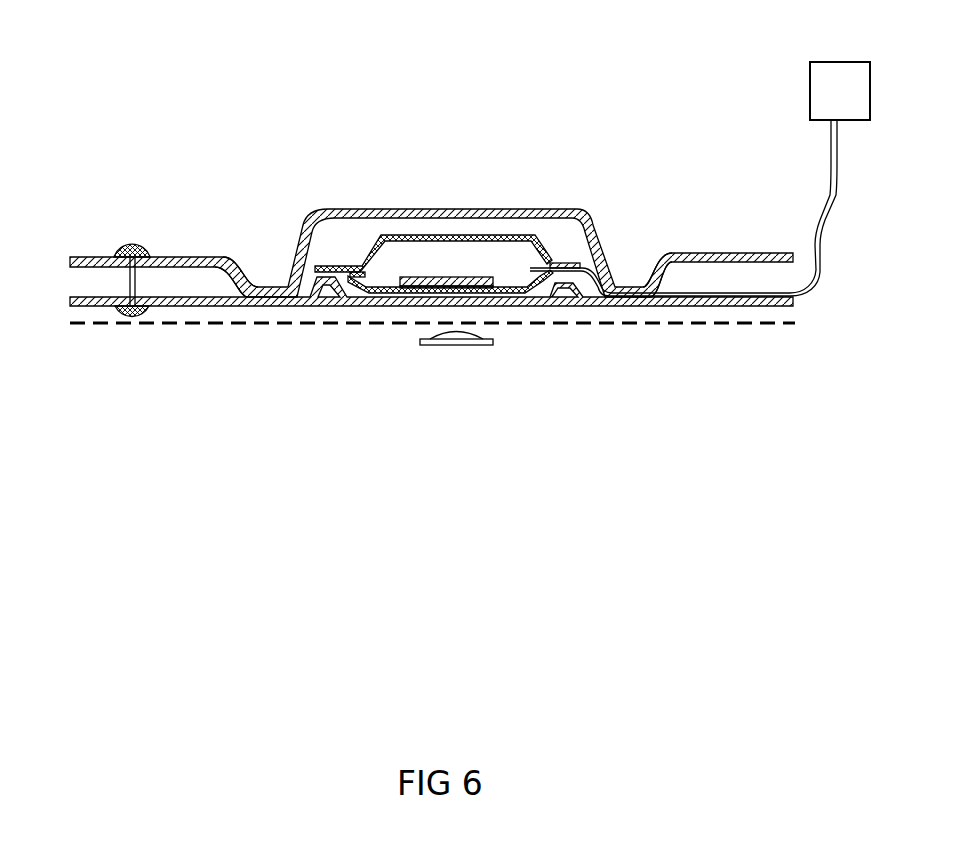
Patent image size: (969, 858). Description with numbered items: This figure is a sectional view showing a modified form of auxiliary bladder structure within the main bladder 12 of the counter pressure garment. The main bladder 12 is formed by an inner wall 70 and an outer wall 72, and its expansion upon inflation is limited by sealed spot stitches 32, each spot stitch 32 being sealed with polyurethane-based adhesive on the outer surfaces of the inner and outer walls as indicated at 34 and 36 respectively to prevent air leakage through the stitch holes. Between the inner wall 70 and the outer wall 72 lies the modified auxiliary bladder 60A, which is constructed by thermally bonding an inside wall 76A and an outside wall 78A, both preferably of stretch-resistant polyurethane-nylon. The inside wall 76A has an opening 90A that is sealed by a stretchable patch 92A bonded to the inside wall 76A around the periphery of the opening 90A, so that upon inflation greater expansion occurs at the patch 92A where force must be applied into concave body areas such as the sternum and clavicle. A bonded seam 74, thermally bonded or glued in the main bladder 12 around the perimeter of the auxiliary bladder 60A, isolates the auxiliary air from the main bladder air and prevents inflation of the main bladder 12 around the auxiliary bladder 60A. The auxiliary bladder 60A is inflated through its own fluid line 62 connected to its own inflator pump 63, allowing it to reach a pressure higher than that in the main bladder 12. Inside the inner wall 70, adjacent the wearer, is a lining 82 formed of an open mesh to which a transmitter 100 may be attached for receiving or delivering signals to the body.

The main bladder 12 is at (409, 203).
The spot stitch 32 is at (139, 263).
The seal on inner wall 34 is at (131, 318).
The seal on outer wall 36 is at (130, 243).
The modified auxiliary bladder 60A is at (444, 308).
The fluid line 62 is at (818, 294).
The inflator pump 63 is at (832, 90).
The inner wall 70 is at (192, 306).
The outer wall 72 is at (88, 257).
The bonded seam 74 is at (265, 287).
The inside wall 76A is at (395, 291).
The outside wall 78A is at (404, 235).
The lining 82 is at (633, 326).
The opening 90A is at (483, 300).
The stretchable patch 92A is at (442, 292).
The transmitter 100 is at (462, 348).